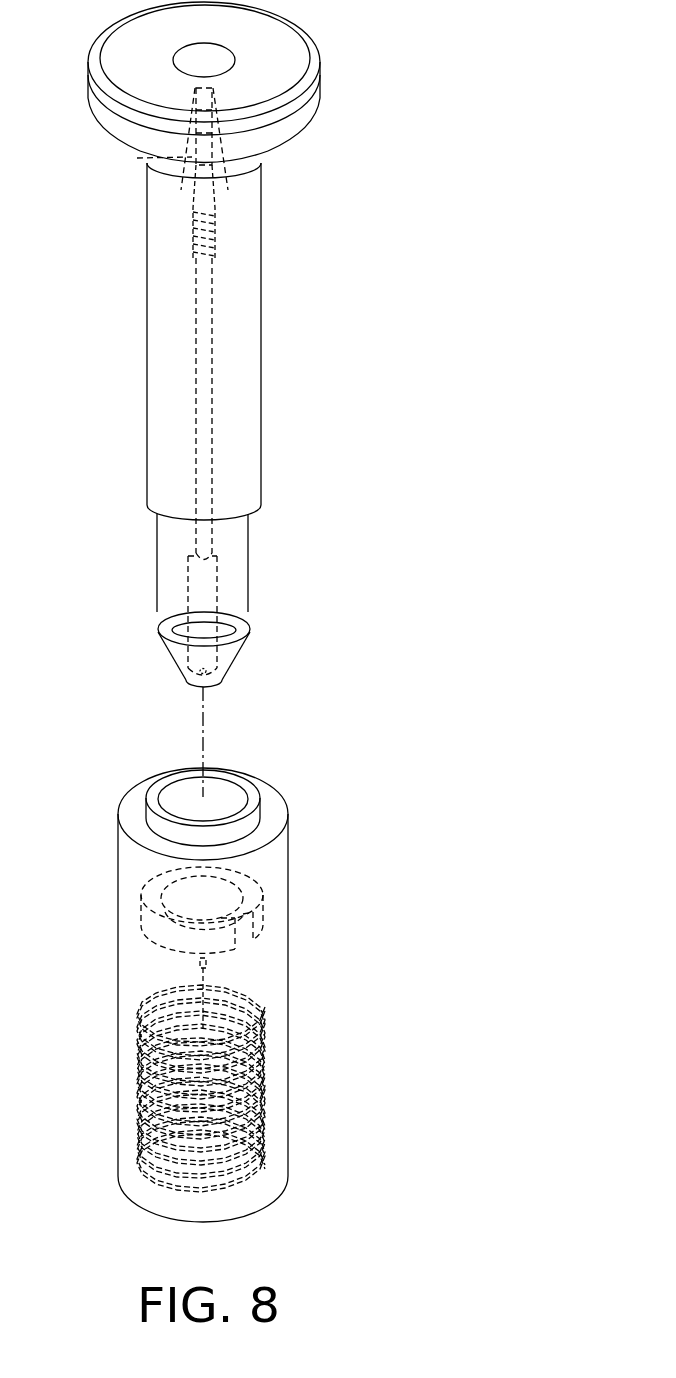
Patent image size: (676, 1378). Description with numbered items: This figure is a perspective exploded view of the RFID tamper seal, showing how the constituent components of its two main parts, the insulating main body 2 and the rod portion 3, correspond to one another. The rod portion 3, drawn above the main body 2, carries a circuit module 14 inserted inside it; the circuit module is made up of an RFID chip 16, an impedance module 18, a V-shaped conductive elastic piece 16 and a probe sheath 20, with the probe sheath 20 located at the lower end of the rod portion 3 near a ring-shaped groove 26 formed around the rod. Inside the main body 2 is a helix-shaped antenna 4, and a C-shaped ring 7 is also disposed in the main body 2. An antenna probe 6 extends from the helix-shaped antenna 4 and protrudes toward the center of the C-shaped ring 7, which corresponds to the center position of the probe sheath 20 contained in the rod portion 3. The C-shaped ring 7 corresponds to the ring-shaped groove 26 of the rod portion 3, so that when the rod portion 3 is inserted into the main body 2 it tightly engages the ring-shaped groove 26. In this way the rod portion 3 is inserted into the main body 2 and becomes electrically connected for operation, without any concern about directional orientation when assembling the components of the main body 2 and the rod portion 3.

The insulating main body 2 is at (273, 1112).
The rod portion 3 is at (261, 347).
The antenna 4 is at (137, 1067).
The antenna probe 6 is at (205, 968).
The C-shaped ring 7 is at (252, 922).
The circuit module 14 is at (205, 287).
The RFID chip 16 is at (137, 158).
The impedance module 18 is at (213, 227).
The probe sheath 20 is at (207, 661).
The ring-shaped groove 26 is at (220, 627).